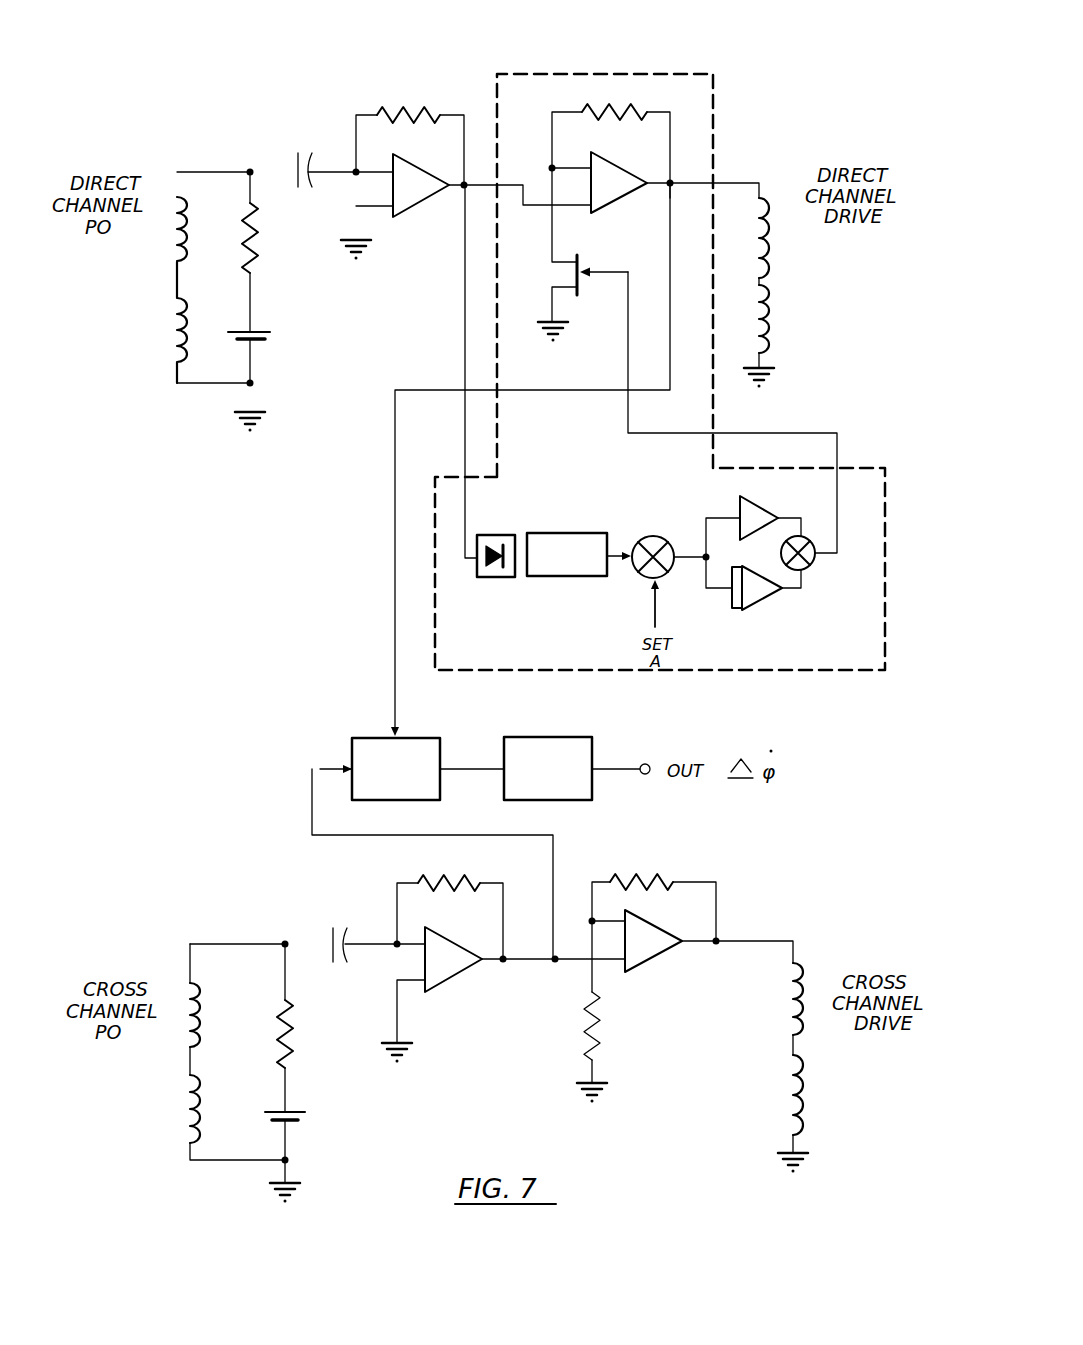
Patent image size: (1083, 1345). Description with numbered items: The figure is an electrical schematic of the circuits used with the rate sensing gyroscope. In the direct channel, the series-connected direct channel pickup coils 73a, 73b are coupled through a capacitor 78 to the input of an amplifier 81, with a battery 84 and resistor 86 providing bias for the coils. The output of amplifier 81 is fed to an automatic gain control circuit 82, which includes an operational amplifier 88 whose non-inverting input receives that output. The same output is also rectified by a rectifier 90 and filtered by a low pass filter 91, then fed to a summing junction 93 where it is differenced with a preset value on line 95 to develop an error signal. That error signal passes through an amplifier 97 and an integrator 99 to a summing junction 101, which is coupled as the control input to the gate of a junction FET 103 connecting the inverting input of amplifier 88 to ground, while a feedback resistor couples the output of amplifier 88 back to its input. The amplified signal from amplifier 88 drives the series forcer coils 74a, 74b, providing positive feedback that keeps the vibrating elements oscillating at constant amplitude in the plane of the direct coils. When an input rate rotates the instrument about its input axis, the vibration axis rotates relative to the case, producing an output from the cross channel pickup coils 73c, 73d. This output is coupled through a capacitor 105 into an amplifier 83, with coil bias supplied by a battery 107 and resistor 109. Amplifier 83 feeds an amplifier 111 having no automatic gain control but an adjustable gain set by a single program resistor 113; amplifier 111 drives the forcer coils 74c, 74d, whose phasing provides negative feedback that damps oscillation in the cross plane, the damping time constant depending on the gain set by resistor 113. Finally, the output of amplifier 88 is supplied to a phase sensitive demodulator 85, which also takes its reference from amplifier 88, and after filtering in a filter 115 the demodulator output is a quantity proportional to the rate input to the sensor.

The direct channel pickup coil 73a is at (190, 332).
The direct channel pickup coil 73b is at (193, 225).
The cross channel pickup coil 73c is at (200, 1008).
The cross channel pickup coil 73d is at (200, 1105).
The direct channel forcer coil 74a is at (775, 303).
The direct channel forcer coil 74b is at (773, 238).
The cross channel forcer coil 74c is at (783, 1015).
The cross channel forcer coil 74d is at (783, 1100).
The capacitor 78 is at (297, 153).
The amplifier 81 is at (430, 200).
The automatic gain control circuit 82 is at (650, 72).
The amplifier 83 is at (452, 982).
The battery 84 is at (265, 338).
The phase sensitive demodulator 85 is at (367, 738).
The resistor 86 is at (262, 250).
The operational amplifier 88 is at (630, 193).
The rectifier 90 is at (508, 578).
The low pass filter 91 is at (595, 577).
The summing junction 93 is at (659, 535).
The line 95 is at (657, 616).
The amplifier 97 is at (740, 503).
The integrator 99 is at (747, 610).
The summing junction 101 is at (810, 569).
The junction FET 103 is at (580, 286).
The capacitor 105 is at (327, 935).
The battery 107 is at (298, 1120).
The resistor 109 is at (295, 1027).
The amplifier 111 is at (650, 962).
The program resistor 113 is at (660, 880).
The filter 115 is at (575, 737).